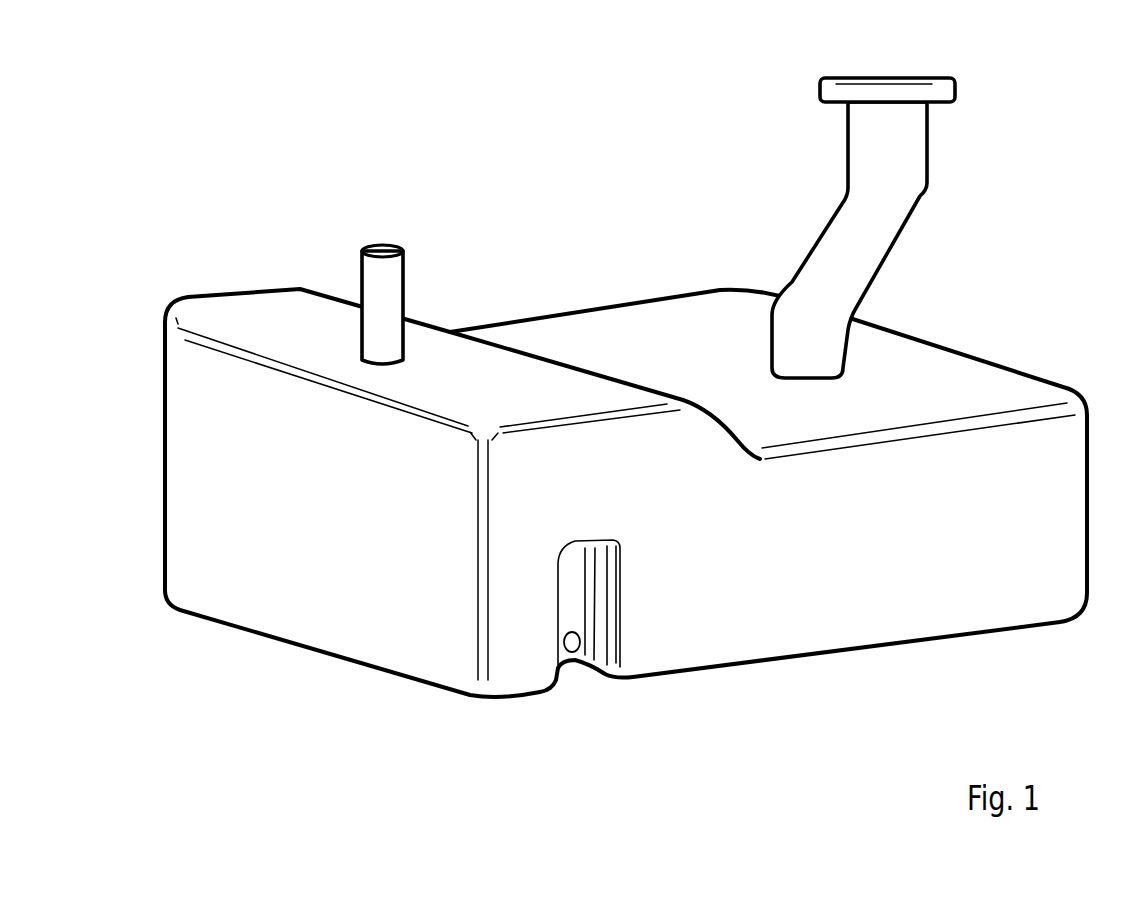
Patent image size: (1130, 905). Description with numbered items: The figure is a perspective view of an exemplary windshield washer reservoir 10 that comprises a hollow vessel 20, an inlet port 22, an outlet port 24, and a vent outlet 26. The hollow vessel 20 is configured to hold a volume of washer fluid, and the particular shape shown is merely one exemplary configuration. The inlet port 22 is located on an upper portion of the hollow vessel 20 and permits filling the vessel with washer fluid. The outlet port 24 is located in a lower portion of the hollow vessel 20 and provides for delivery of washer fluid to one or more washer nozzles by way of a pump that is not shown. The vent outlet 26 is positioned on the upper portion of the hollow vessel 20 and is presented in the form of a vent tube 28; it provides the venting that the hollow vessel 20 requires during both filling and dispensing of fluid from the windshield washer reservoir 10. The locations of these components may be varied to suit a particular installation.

The windshield washer reservoir 10 is at (602, 400).
The hollow vessel 20 is at (298, 605).
The inlet port 22 is at (900, 191).
The outlet port 24 is at (578, 652).
The vent outlet 26 is at (362, 270).
The vent tube 28 is at (384, 288).